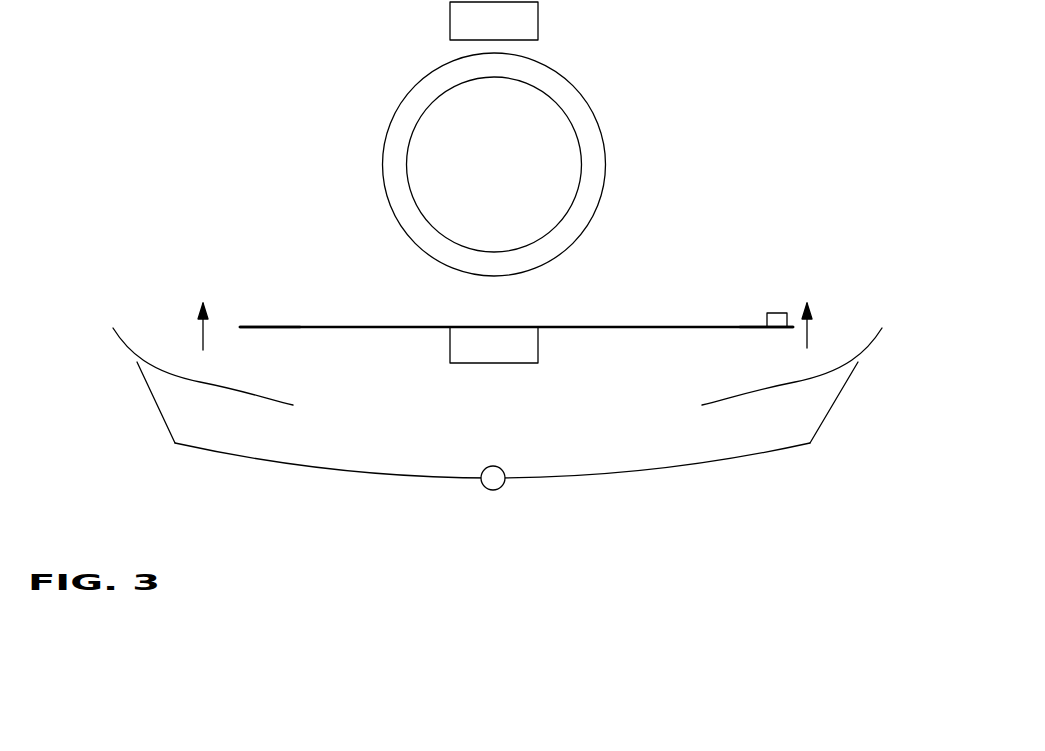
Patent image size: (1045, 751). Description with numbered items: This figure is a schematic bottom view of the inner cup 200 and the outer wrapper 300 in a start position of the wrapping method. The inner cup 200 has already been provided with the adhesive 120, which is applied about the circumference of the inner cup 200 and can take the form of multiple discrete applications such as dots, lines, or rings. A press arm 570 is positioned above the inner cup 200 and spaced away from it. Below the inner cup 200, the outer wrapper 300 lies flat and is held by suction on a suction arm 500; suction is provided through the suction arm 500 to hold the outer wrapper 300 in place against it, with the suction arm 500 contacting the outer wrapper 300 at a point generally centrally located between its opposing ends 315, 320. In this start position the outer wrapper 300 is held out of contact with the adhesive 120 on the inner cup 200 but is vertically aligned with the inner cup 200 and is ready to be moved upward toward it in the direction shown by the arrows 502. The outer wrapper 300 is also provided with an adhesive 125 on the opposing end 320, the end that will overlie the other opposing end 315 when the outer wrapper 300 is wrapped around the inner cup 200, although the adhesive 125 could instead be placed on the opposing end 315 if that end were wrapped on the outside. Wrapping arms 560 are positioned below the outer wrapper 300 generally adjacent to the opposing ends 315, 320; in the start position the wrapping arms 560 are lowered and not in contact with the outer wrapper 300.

The press arm 570 is at (538, 22).
The adhesive 120 is at (605, 155).
The inner cup 200 is at (412, 130).
The outer wrapper 300 is at (313, 327).
The opposing end 315 is at (252, 327).
The opposing end 320 is at (753, 325).
The adhesive 125 is at (780, 313).
The suction arm 500 is at (520, 363).
The arrows 502 is at (202, 337).
The wrapping arms 560 is at (133, 365).